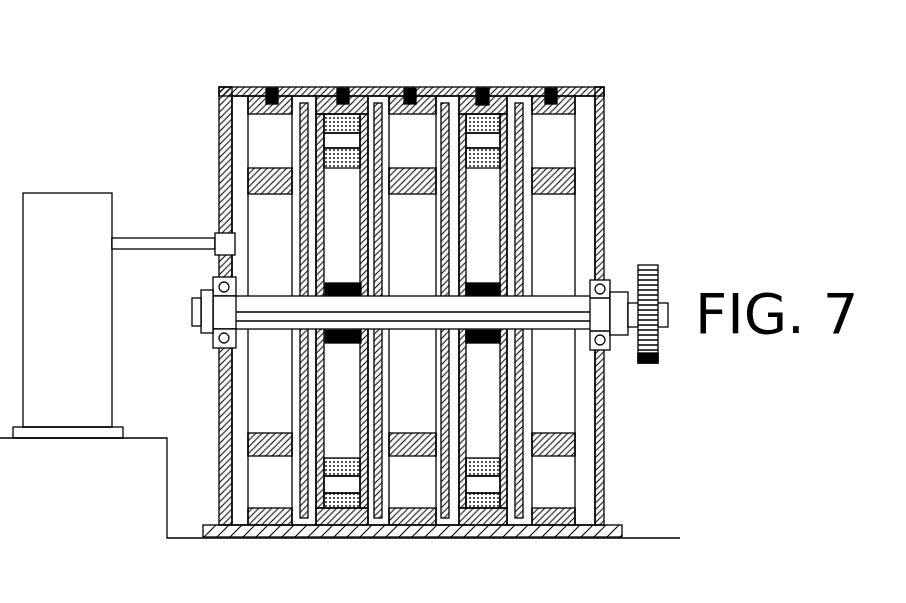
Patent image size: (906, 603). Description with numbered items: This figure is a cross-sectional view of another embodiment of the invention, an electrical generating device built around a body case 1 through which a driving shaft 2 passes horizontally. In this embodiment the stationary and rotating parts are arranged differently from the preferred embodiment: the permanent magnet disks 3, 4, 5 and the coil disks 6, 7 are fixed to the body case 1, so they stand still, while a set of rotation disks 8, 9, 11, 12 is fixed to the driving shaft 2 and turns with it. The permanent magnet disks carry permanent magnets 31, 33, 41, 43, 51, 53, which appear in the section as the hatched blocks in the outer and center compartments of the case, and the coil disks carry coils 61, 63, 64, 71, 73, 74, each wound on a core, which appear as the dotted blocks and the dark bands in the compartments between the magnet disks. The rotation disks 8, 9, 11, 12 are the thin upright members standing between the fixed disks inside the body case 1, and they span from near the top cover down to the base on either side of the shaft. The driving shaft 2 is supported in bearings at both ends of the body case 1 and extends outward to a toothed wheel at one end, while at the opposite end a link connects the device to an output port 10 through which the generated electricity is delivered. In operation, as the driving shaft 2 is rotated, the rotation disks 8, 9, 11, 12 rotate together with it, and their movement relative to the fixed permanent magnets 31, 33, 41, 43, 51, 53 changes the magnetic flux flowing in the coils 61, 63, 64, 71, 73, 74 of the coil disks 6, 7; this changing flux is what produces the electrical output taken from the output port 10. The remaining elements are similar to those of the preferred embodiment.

The body case 1 is at (605, 412).
The driving shaft 2 is at (570, 300).
The permanent magnet disk 3 is at (570, 89).
The permanent magnet disk 4 is at (395, 90).
The permanent magnet disk 5 is at (280, 87).
The coil disk 6 is at (498, 96).
The coil disk 7 is at (355, 90).
The rotation disk 8 is at (520, 155).
The rotation disk 9 is at (443, 227).
The output port 10 is at (78, 193).
The rotation disk 11 is at (310, 222).
The rotation disk 12 is at (300, 147).
The permanent magnet 31 is at (567, 140).
The permanent magnet 33 is at (560, 498).
The permanent magnet 41 is at (437, 97).
The permanent magnet 43 is at (417, 498).
The permanent magnet 51 is at (262, 132).
The permanent magnet 53 is at (272, 500).
The coil 61 is at (528, 90).
The coil 63 is at (478, 513).
The coil 64 is at (485, 345).
The coil 71 is at (332, 90).
The coil 73 is at (345, 502).
The coil 74 is at (343, 345).